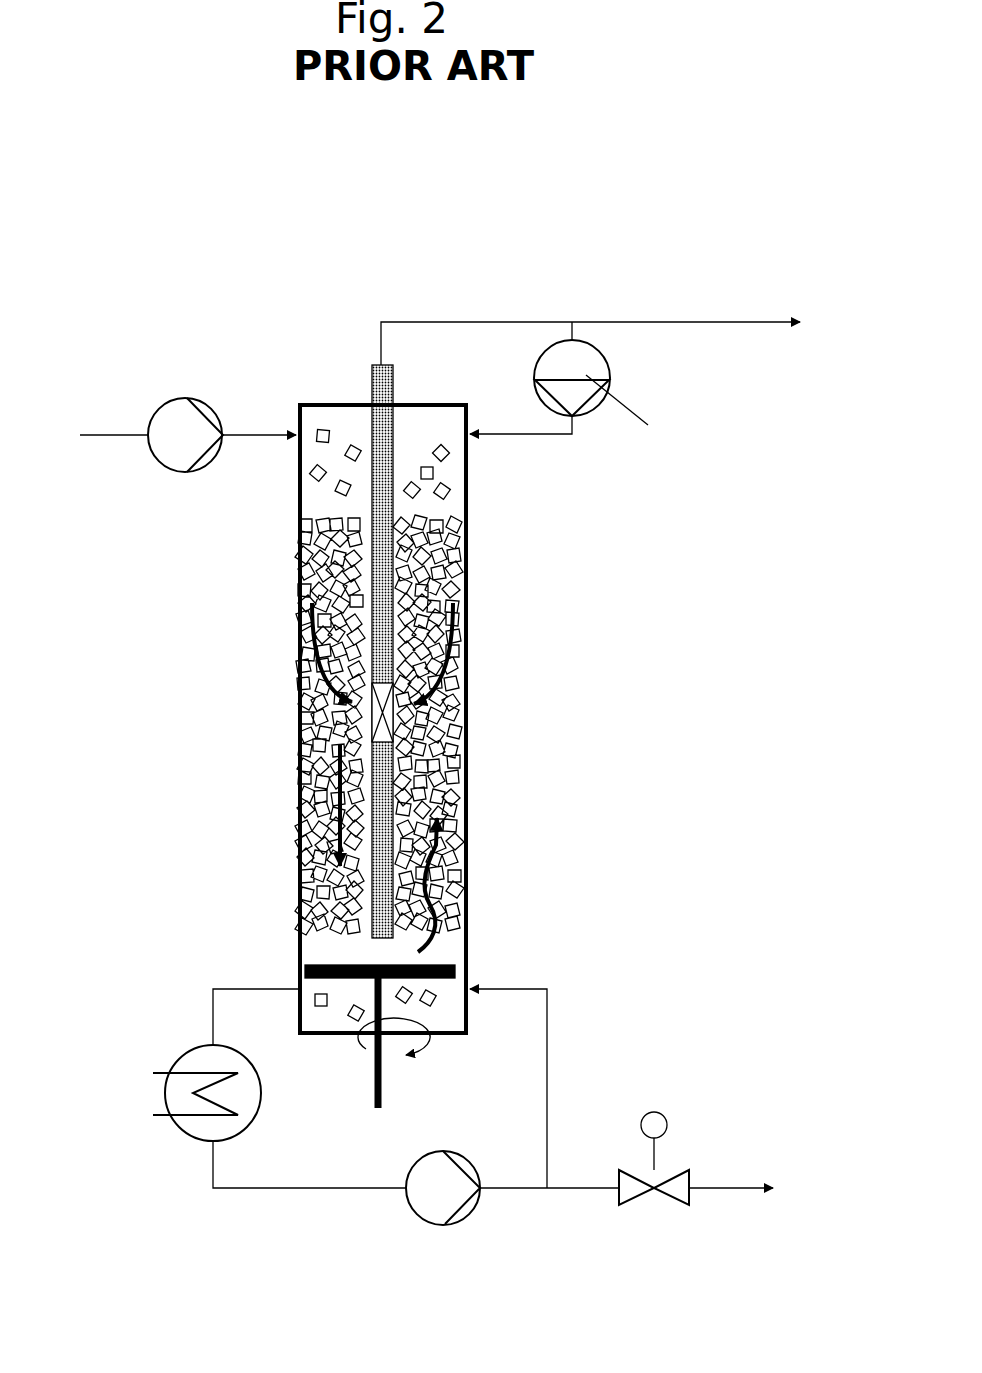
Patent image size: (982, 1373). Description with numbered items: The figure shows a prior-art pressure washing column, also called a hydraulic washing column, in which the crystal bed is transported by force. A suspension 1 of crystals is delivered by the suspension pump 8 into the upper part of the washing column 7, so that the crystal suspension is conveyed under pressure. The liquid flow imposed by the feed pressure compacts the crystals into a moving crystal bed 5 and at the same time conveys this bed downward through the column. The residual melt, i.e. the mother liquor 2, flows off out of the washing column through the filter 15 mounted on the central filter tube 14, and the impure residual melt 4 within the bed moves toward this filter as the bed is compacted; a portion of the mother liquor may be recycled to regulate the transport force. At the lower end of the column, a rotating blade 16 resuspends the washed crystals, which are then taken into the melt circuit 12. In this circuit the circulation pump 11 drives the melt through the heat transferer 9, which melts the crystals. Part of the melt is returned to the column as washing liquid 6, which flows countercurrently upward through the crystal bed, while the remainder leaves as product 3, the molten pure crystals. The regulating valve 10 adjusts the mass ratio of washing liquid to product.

The suspension 1 is at (94, 435).
The residual melt (mother liquor) 2 is at (611, 328).
The product (molten pure crystals) 3 is at (752, 1183).
The impure residual melt 4 is at (390, 653).
The moving crystal bed 5 is at (296, 808).
The washing liquid (melt) 6 is at (464, 832).
The washing column 7 is at (292, 516).
The suspension pump 8 is at (185, 418).
The heat transferer 9 is at (196, 1124).
The regulating valve 10 is at (678, 1192).
The circulation pump 11 is at (427, 1200).
The melt circuit 12 is at (297, 1193).
The filter tube 14 is at (395, 527).
The filter 15 is at (385, 729).
The rotating blade 16 is at (300, 970).